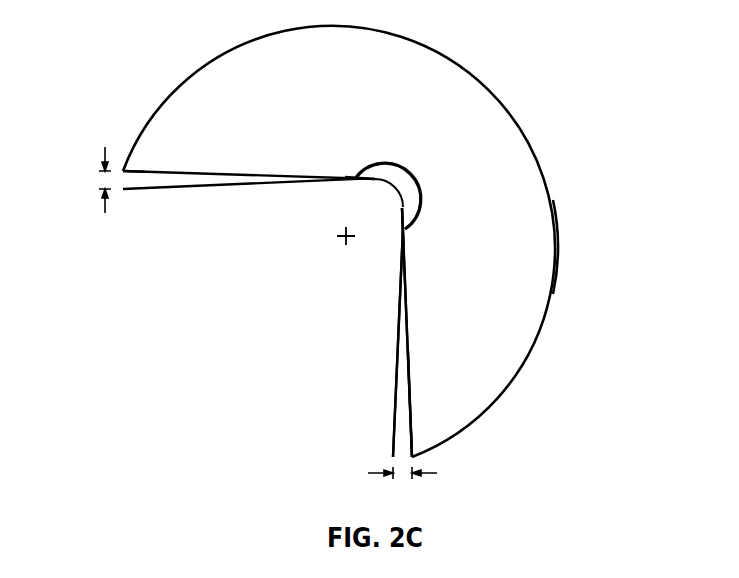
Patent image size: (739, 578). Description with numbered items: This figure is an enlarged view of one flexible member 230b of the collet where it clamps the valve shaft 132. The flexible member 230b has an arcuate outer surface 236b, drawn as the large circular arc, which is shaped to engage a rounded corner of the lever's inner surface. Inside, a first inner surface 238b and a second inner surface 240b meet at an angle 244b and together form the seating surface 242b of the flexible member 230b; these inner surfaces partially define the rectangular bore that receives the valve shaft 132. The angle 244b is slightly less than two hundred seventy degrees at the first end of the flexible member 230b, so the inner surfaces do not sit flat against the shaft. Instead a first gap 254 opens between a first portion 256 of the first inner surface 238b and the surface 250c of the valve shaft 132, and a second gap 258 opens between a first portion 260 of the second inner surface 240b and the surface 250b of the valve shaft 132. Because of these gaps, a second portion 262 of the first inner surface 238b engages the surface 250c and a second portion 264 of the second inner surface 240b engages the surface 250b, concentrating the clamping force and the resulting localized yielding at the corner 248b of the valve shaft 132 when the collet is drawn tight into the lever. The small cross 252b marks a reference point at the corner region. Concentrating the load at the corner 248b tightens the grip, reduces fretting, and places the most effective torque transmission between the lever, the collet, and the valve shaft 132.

The flexible member 230b is at (473, 97).
The arcuate outer surface 236b is at (538, 153).
The second inner surface 240b is at (217, 173).
The surface of valve shaft 250b is at (237, 190).
The first portion of second inner surface 260 is at (142, 170).
The second gap 258 is at (97, 182).
The second portion of second inner surface 264 is at (345, 177).
The angle 244b is at (407, 173).
The corner of valve shaft 248b is at (378, 193).
The center of arcuate surface 252b is at (340, 242).
The seating surface 242b is at (349, 277).
The second portion of first inner surface 262 is at (407, 236).
The first inner surface 238b is at (408, 320).
The surface of valve shaft 250c is at (395, 405).
The valve shaft 132 is at (397, 340).
The first portion of first inner surface 256 is at (410, 390).
The first gap 254 is at (402, 477).